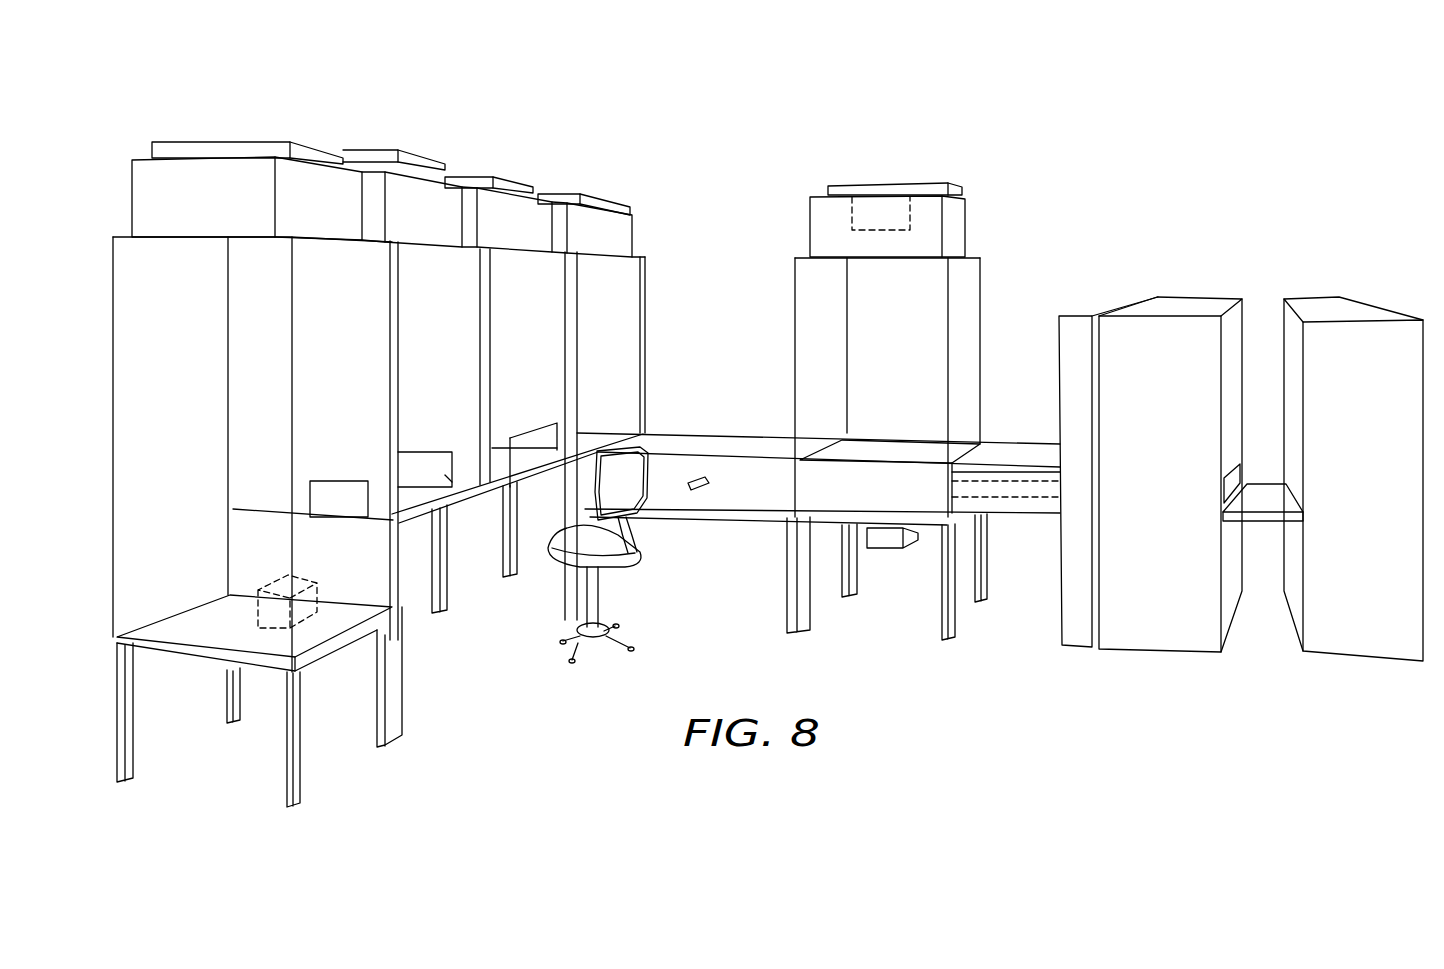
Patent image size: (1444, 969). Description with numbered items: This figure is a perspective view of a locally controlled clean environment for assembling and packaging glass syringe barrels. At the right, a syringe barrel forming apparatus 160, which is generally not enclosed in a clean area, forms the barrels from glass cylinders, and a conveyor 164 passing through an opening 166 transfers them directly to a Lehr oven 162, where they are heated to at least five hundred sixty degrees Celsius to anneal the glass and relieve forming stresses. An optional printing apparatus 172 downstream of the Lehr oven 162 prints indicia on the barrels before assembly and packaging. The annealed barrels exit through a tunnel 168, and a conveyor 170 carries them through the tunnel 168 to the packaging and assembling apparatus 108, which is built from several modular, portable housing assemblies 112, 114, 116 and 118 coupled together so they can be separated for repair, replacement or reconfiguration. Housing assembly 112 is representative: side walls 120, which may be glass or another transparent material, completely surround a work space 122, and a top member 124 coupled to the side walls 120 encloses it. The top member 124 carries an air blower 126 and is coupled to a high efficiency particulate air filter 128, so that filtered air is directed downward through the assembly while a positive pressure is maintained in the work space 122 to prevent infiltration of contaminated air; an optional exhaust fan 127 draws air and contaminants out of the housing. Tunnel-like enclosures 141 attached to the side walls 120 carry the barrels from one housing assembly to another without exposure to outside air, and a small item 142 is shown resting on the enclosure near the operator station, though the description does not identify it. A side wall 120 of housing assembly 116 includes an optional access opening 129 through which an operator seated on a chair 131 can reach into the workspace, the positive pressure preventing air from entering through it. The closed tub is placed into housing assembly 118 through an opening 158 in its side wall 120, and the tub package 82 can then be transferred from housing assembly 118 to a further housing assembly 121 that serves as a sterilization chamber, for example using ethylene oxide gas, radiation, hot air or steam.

The apparatus 108 is at (785, 124).
The further housing assembly 121 is at (233, 134).
The air blower 126 is at (372, 163).
The housing assembly 118 is at (407, 149).
The housing assembly 116 is at (493, 171).
The housing assembly 114 is at (629, 206).
The housing assembly 112 is at (987, 272).
The side walls 120 is at (795, 329).
The top member 124 is at (967, 221).
The high efficiency particulate air filter 128 is at (852, 220).
The tunnel-like enclosures 141 is at (735, 438).
The work space 122 is at (923, 450).
The tunnel 168 is at (1000, 515).
The conveyor 170 is at (1037, 502).
The exhaust fan 127 is at (892, 547).
The scanner 142 is at (710, 482).
The opening 158 is at (457, 498).
The access opening 129 is at (528, 460).
The chair 131 is at (637, 553).
The tub package 82 is at (318, 598).
The printing apparatus 172 is at (1085, 309).
The Lehr oven 162 is at (1205, 298).
The syringe barrel forming apparatus 160 is at (1338, 298).
The opening 166 is at (1246, 486).
The conveyor 164 is at (1265, 524).